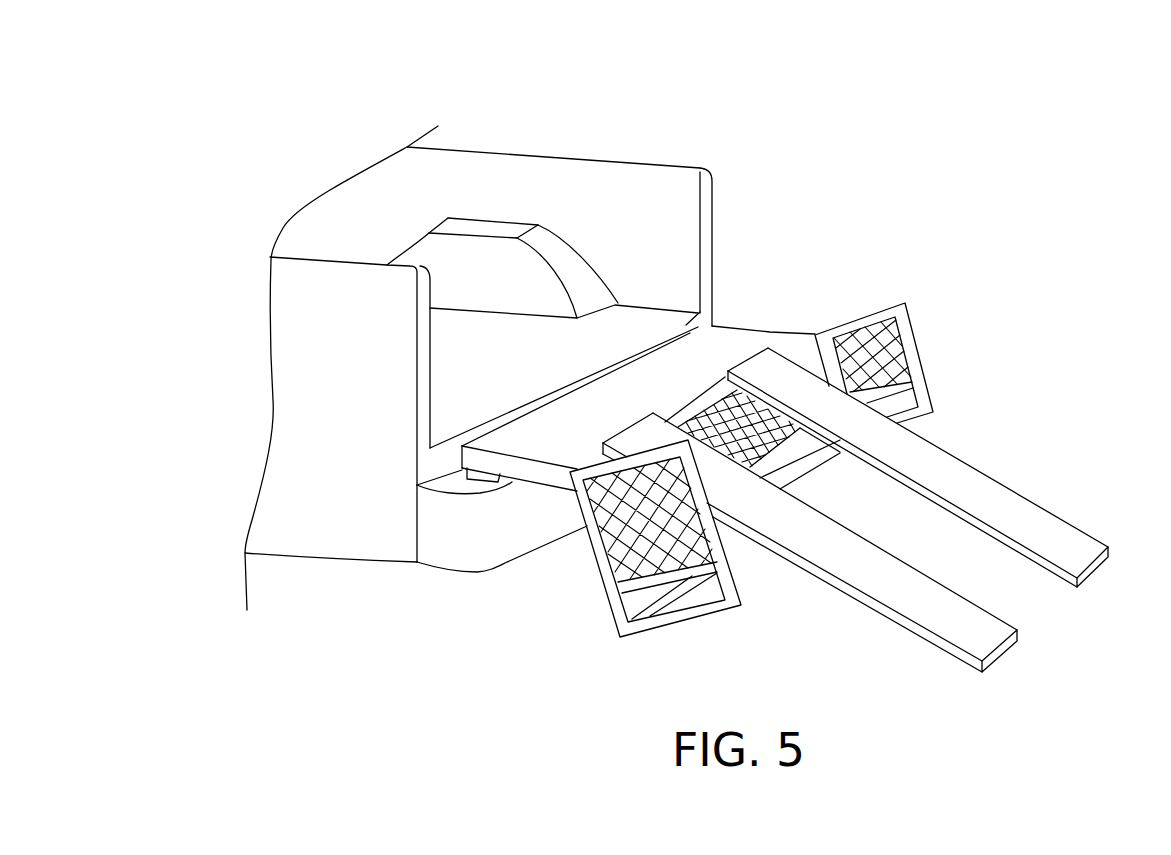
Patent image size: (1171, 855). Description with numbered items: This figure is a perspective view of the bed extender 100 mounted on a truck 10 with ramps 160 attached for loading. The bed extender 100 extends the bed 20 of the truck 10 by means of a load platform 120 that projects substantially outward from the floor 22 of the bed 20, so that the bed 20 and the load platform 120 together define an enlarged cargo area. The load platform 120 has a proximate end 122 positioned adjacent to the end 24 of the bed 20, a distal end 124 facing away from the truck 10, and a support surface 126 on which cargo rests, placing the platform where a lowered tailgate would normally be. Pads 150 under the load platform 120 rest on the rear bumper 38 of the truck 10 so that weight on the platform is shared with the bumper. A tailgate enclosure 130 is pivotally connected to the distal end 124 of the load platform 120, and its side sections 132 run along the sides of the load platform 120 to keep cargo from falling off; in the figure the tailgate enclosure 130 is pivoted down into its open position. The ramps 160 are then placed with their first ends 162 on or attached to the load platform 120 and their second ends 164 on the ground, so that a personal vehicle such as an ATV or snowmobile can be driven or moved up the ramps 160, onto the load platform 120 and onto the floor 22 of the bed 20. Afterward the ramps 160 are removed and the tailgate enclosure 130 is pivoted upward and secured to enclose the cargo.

The truck 10 is at (647, 126).
The bed 20 is at (570, 190).
The floor 22 is at (467, 348).
The end 24 is at (645, 350).
The rear bumper 38 is at (448, 533).
The bed extender 100 is at (935, 305).
The load platform 120 is at (720, 350).
The proximate end 122 is at (675, 350).
The distal end 124 is at (866, 340).
The support surface 126 is at (620, 383).
The tailgate enclosure 130 is at (928, 366).
The side sections 132 is at (604, 563).
The pads 150 is at (480, 473).
The ramps 160 is at (965, 478).
The first ends 162 is at (620, 424).
The second ends 164 is at (1093, 570).